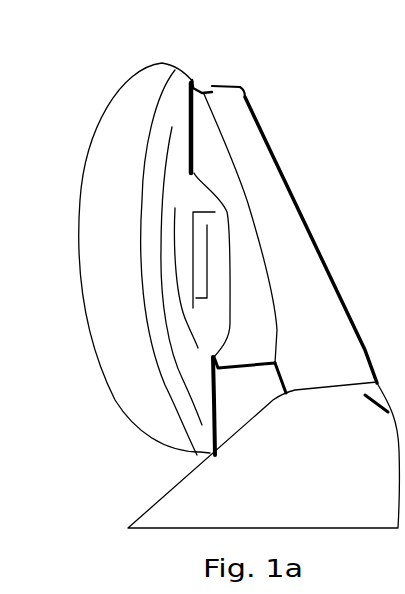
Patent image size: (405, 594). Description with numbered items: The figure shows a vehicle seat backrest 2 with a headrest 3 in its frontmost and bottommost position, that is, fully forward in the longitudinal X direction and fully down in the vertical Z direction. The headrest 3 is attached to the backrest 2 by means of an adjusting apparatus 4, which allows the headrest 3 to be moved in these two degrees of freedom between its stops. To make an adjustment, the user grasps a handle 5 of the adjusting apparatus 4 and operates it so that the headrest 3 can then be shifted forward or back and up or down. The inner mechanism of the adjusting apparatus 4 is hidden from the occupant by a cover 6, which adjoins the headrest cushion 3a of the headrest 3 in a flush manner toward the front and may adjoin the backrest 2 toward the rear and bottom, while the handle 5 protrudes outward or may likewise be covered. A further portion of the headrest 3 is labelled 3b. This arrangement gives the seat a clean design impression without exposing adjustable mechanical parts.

The backrest 2 is at (207, 514).
The headrest 3 is at (107, 114).
The headrest cushion 3a is at (83, 190).
The upper ring portion 3b is at (178, 72).
The adjusting apparatus 4 is at (297, 198).
The handle 5 is at (210, 290).
The cover 6 is at (212, 83).